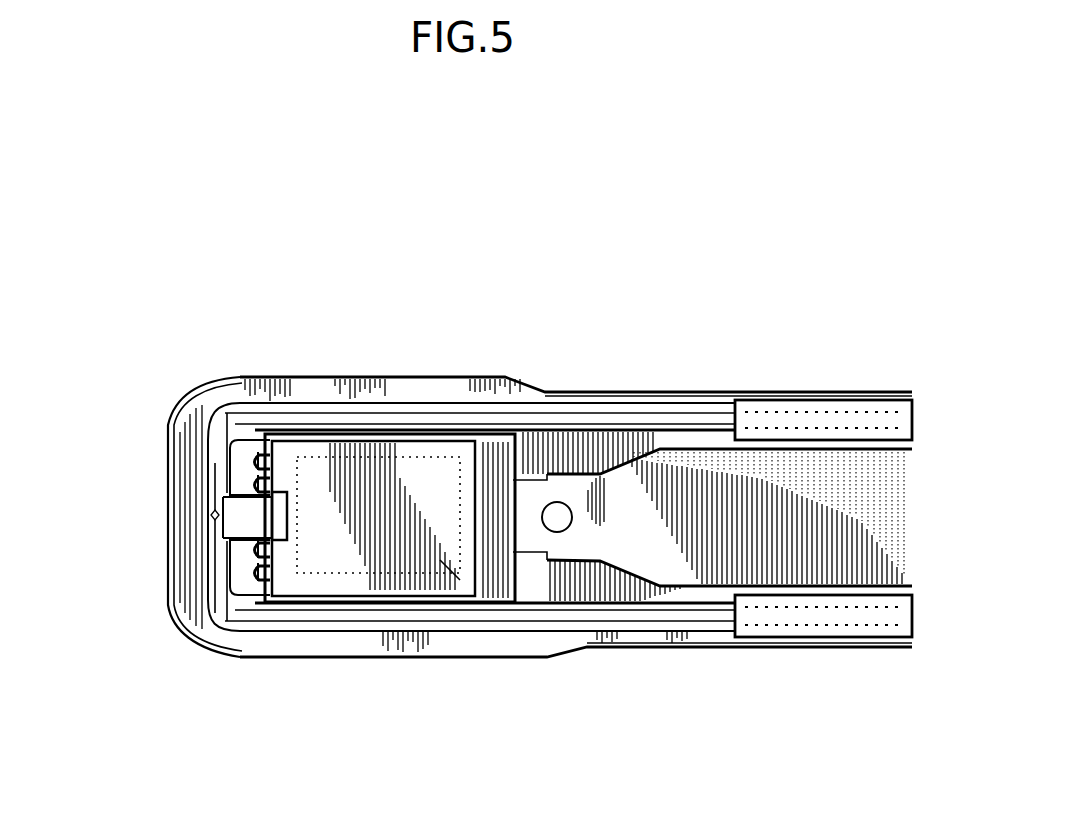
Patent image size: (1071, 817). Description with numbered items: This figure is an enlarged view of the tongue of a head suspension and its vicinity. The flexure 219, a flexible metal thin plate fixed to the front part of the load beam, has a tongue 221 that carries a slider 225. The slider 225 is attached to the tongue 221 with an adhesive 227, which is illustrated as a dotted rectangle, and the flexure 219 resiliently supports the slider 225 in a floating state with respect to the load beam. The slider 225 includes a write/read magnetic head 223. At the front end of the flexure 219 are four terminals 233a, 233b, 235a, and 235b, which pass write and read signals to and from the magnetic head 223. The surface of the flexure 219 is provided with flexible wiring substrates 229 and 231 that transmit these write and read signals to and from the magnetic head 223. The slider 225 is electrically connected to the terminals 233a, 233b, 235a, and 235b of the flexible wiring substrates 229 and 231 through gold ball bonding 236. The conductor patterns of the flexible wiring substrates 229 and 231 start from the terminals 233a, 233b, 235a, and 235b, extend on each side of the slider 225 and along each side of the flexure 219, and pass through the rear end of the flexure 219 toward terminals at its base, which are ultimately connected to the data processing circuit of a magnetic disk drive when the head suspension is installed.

The flexure 219 is at (510, 393).
The tongue 221 is at (372, 598).
The write/read magnetic head 223 is at (282, 520).
The slider 225 is at (390, 490).
The adhesive 227 is at (447, 575).
The flexible wiring substrate 229 is at (619, 412).
The flexible wiring substrate 231 is at (644, 622).
The terminal 233a is at (247, 487).
The terminal 233b is at (247, 463).
The terminal 235a is at (250, 548).
The terminal 235b is at (250, 572).
The gold ball bonding 236 is at (272, 480).